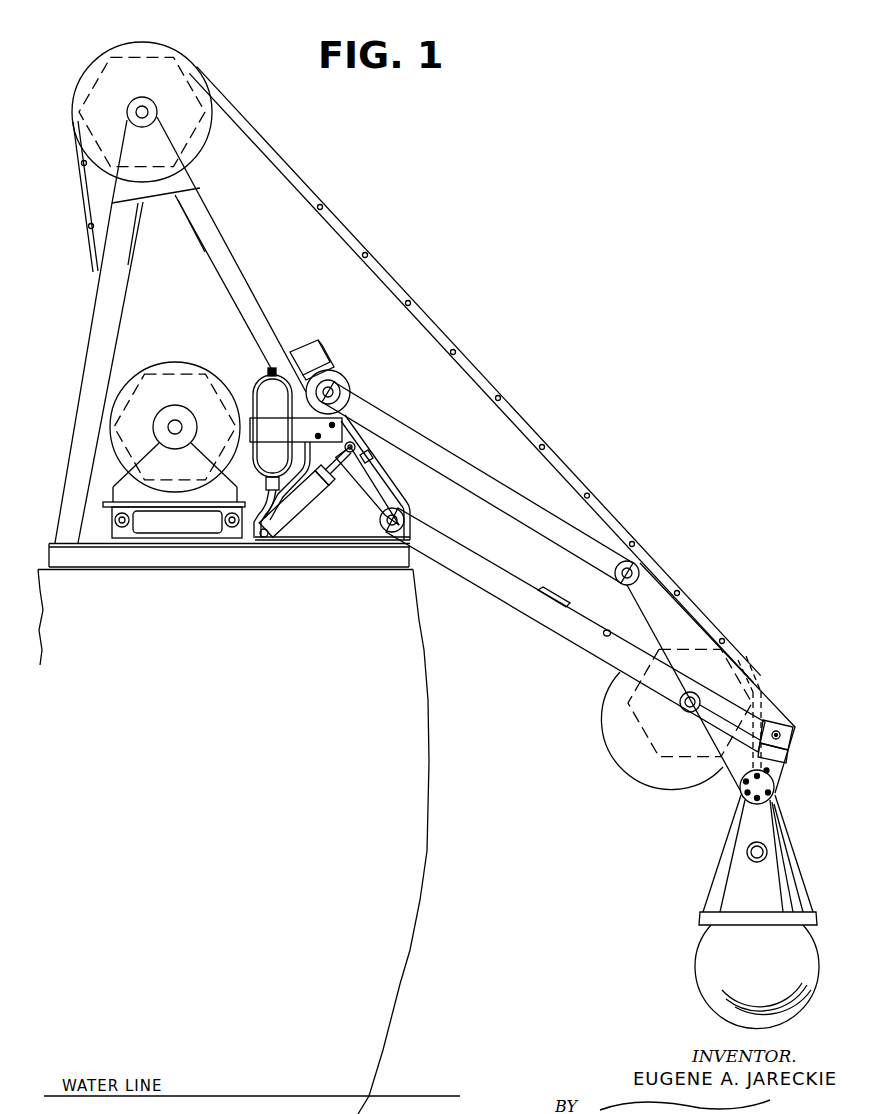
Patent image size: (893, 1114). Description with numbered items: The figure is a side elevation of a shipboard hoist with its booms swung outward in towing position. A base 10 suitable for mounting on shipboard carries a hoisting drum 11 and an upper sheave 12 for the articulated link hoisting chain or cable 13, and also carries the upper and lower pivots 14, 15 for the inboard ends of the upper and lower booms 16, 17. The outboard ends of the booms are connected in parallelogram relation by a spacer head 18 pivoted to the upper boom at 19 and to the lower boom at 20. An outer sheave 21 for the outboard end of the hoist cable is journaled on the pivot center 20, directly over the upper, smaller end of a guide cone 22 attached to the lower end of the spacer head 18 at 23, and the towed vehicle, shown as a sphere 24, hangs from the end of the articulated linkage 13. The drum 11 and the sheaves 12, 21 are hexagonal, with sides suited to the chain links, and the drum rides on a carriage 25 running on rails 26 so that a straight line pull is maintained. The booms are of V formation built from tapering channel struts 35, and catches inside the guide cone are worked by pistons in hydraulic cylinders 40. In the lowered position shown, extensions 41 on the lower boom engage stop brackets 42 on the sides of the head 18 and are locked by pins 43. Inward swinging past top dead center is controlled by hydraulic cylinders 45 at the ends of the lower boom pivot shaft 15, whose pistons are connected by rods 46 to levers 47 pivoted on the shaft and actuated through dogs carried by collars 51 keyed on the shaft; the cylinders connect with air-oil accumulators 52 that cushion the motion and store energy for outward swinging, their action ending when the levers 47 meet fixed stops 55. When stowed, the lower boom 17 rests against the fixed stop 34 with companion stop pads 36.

The base 10 is at (332, 555).
The drum 11 is at (182, 368).
The upper sheave 12 is at (155, 48).
The articulated link hoisting chain or cable 13 is at (290, 171).
The upper pivot 14 is at (340, 388).
The lower pivot 15 is at (398, 518).
The upper boom 16 is at (493, 487).
The lower boom 17 is at (503, 608).
The spacer head 18 is at (678, 628).
The upper boom pivot on spacer head 19 is at (642, 563).
The lower boom pivot on spacer head 20 is at (680, 707).
The outer sheave 21 is at (745, 663).
The guide cone 22 is at (722, 895).
The guide cone attachment 23 is at (739, 789).
The sphere 24 is at (772, 974).
The carriage 25 is at (125, 484).
The rails 26 is at (130, 520).
The fixed stop 34 is at (322, 343).
The tapering channel struts 35 is at (597, 634).
The stop pads 36 is at (553, 597).
The hydraulic cylinders 40 is at (757, 860).
The extensions 41 is at (727, 720).
The stop brackets 42 is at (783, 758).
The pins 43 is at (791, 736).
The hydraulic cylinders 45 is at (292, 505).
The rods 46 is at (331, 476).
The levers 47 is at (366, 484).
The collars 51 is at (394, 530).
The air-oil accumulators 52 is at (263, 387).
The fixed stops 55 is at (377, 463).